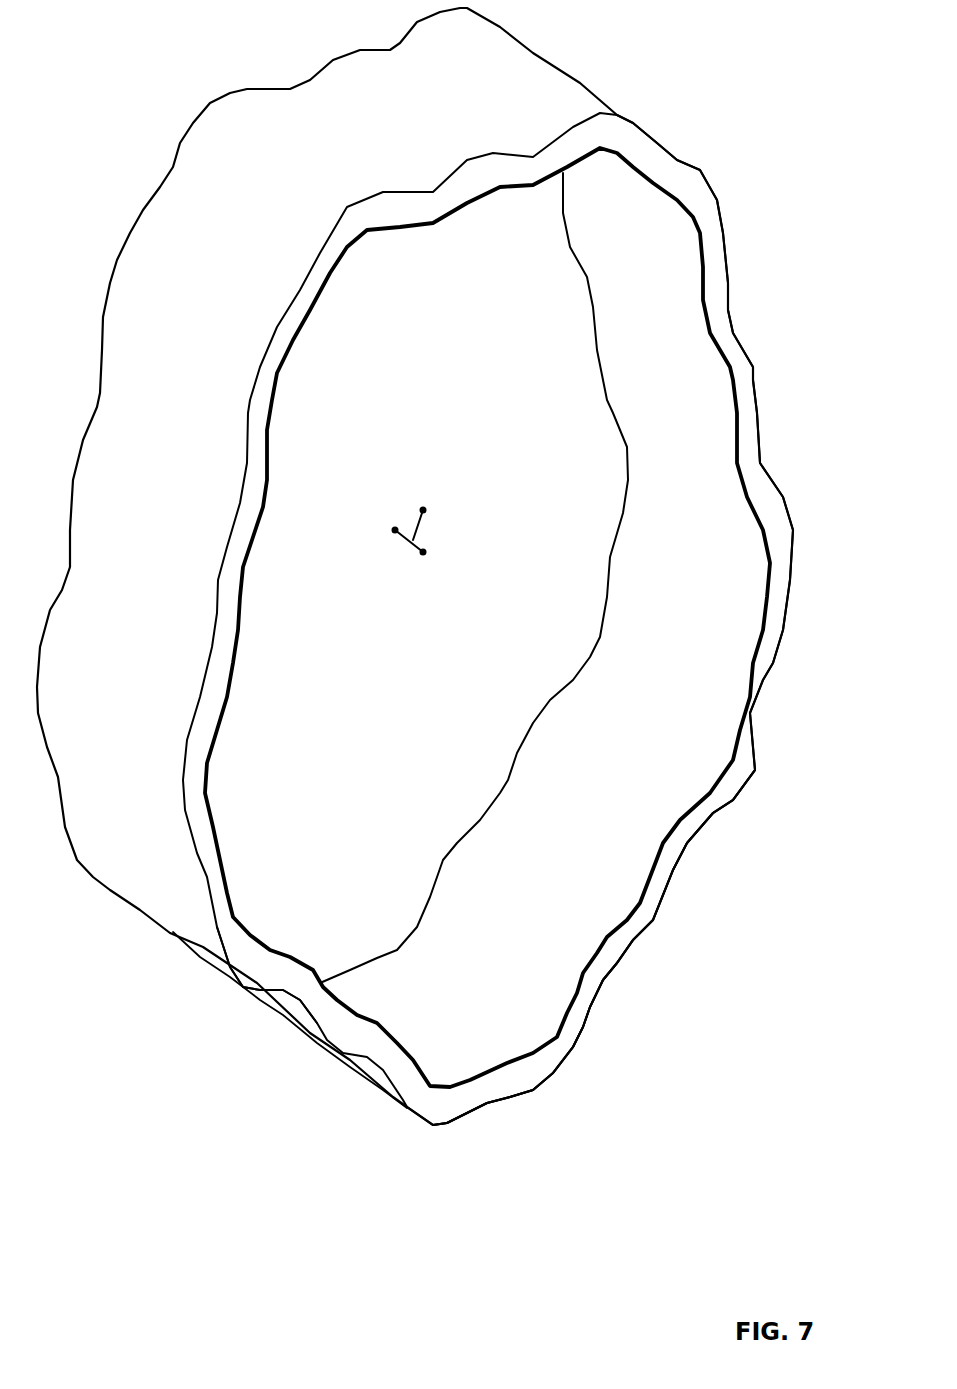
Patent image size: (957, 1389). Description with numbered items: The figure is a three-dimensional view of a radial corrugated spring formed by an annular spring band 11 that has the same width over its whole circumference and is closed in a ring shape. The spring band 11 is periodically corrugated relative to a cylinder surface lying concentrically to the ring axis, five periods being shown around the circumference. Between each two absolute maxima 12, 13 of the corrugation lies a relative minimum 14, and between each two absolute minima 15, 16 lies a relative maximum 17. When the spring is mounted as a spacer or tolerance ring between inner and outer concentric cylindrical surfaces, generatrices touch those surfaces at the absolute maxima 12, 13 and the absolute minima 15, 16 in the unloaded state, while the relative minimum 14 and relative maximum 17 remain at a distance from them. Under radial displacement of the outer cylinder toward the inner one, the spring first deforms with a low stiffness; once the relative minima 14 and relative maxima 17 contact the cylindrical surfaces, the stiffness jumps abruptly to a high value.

The spring band 11 is at (103, 1008).
The absolute maximum 12 is at (230, 987).
The absolute maximum 13 is at (323, 1050).
The relative minimum 14 is at (280, 1000).
The absolute minimum 15 is at (618, 980).
The absolute minimum 16 is at (690, 855).
The relative maximum 17 is at (657, 937).